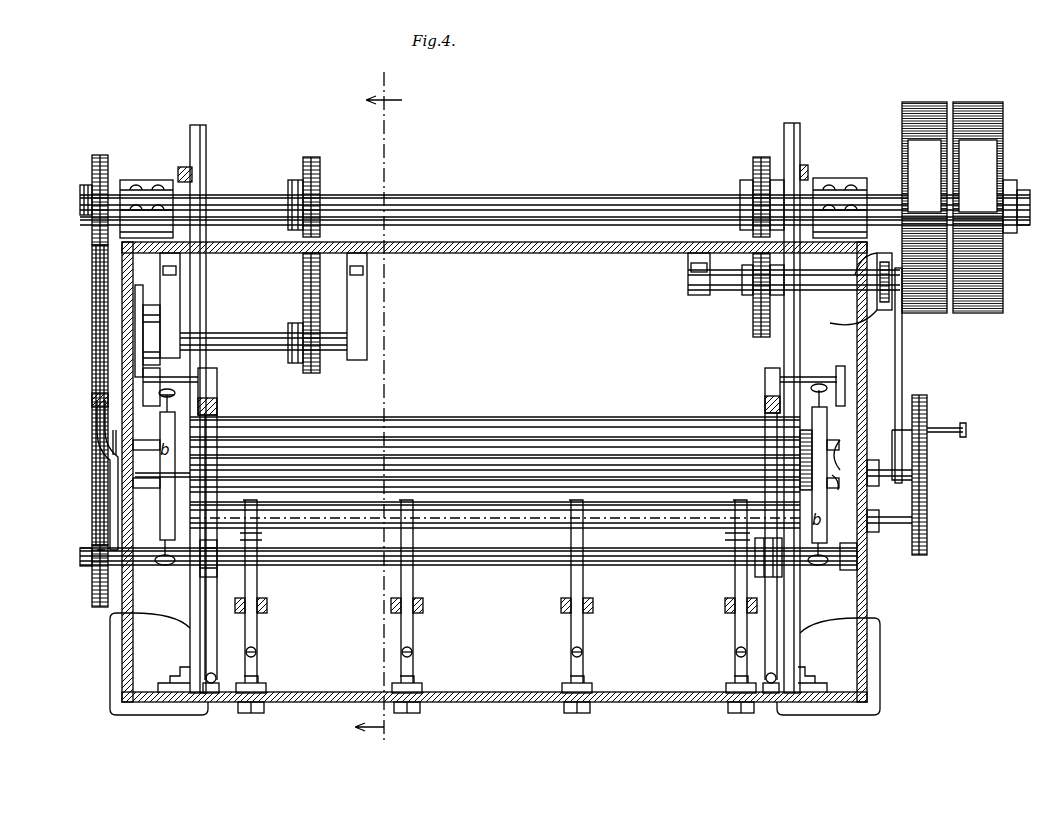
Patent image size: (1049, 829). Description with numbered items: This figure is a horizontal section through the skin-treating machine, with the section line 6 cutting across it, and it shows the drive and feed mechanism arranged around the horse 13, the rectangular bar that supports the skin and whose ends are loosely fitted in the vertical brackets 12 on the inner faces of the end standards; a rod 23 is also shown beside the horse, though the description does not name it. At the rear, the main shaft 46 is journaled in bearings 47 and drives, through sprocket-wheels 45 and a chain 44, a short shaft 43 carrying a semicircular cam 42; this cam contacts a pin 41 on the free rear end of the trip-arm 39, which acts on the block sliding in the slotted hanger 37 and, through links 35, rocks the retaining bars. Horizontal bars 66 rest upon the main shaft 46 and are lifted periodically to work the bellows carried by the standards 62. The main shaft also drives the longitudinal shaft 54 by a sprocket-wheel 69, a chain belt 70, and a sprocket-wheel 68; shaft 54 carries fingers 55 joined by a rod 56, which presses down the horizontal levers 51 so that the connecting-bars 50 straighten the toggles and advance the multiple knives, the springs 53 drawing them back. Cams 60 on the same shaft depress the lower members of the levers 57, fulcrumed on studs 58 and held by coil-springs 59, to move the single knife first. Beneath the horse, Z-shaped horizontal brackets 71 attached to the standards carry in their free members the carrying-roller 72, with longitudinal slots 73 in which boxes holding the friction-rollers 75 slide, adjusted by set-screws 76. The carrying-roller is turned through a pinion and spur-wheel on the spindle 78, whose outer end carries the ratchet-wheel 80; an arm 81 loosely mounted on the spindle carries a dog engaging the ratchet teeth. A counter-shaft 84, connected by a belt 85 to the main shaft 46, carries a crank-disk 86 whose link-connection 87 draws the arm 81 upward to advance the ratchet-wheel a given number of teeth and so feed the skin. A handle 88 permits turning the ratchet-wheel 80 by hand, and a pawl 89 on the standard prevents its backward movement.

The section line 6 6 is at (378, 412).
The vertical bracket 12 is at (850, 452).
The horse 13 is at (832, 492).
The rod 23 is at (180, 473).
The link 35 is at (97, 421).
The slotted hanger 37 is at (116, 450).
The trip-arm 39 is at (122, 336).
The pin 41 is at (162, 318).
The semicircular cam 42 is at (150, 300).
The short shaft 43 is at (235, 342).
The chain 44 is at (303, 276).
The sprocket-wheel 45 is at (293, 186).
The main shaft 46 is at (590, 196).
The bearing 47 is at (150, 175).
The connecting-bar 50 is at (268, 607).
The horizontal lever 51 is at (258, 585).
The spring 53 is at (256, 653).
The shaft 54 is at (522, 566).
The finger 55 is at (250, 542).
The rod 56 is at (500, 520).
The lever 57 is at (218, 393).
The stud 58 is at (180, 386).
The coil-spring 59 is at (192, 672).
The cam 60 is at (208, 555).
The standard 62 is at (182, 167).
The horizontal bar 66 is at (206, 150).
The sprocket-wheel 68 is at (92, 579).
The sprocket-wheel 69 is at (92, 170).
The chain belt 70 is at (92, 297).
The horizontal bracket 71 is at (819, 463).
The carrying-roller 72 is at (154, 464).
The longitudinal slot 73 is at (495, 454).
The friction-roller 75 is at (495, 509).
The set-screw 76 is at (165, 565).
The spindle 78 is at (880, 472).
The ratchet-wheel 80 is at (928, 491).
The arm 81 is at (906, 445).
The counter-shaft 84 is at (826, 292).
The belt 85 is at (748, 190).
The crank-disk 86 is at (884, 258).
The link-connection 87 is at (902, 370).
The handle 88 is at (942, 428).
The pawl 89 is at (912, 522).